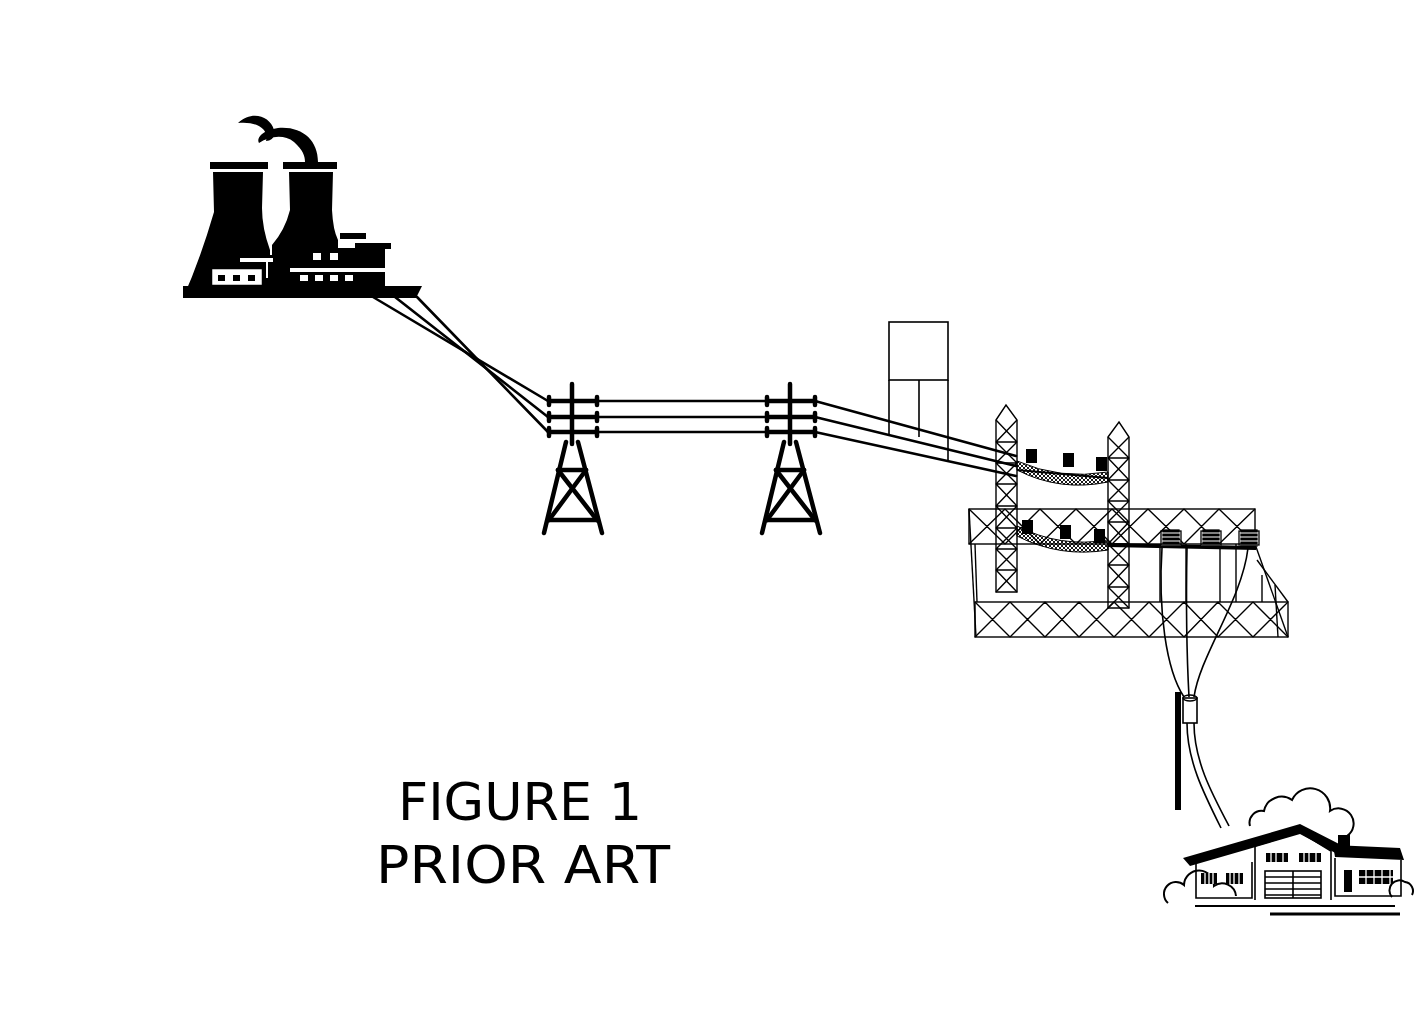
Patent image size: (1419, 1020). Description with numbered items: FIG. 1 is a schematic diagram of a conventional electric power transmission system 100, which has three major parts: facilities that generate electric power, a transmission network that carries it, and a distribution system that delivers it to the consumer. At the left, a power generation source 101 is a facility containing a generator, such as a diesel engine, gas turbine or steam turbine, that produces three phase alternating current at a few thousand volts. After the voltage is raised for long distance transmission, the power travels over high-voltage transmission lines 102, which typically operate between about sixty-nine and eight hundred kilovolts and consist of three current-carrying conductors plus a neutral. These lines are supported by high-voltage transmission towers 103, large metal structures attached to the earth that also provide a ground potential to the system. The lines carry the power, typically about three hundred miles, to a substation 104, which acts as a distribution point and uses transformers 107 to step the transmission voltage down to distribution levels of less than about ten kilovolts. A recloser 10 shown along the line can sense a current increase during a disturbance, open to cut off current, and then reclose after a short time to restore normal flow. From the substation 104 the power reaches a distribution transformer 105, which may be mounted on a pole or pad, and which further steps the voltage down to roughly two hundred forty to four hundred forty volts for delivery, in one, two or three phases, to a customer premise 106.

The electric power transmission system 100 is at (502, 141).
The power generation source 101 is at (303, 181).
The high-voltage transmission lines 102 is at (851, 396).
The high-voltage transmission towers 103 is at (755, 517).
The recloser 10 is at (945, 362).
The substation 104 is at (1128, 548).
The transformers 107 is at (1267, 552).
The distribution transformer 105 is at (1204, 711).
The customer premise 106 is at (1240, 851).